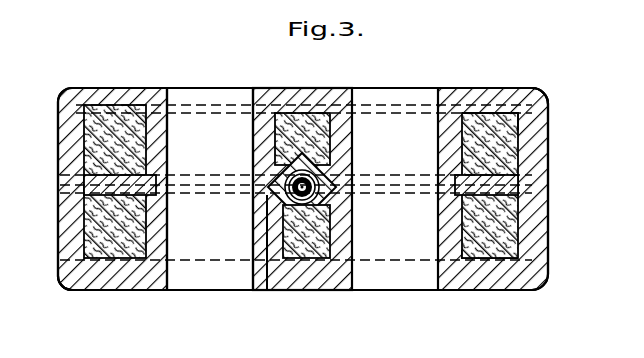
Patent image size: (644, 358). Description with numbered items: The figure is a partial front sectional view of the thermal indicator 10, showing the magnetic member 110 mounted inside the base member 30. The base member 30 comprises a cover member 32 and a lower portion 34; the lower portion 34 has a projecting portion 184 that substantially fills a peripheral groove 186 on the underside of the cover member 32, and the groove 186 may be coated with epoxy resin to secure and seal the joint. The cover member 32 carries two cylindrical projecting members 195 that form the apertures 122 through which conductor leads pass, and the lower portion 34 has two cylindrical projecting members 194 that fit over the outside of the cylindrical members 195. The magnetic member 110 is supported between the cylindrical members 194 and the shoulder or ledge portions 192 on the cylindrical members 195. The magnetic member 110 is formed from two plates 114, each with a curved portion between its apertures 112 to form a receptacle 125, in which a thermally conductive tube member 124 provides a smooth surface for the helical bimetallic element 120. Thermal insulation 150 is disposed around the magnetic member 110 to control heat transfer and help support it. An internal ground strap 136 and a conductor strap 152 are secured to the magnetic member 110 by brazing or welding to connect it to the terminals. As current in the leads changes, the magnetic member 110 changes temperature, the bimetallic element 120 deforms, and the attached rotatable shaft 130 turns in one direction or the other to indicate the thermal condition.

The thermal indicator 10 is at (437, 338).
The base member 30 is at (541, 319).
The cover member 32 is at (497, 90).
The lower portion 34 is at (81, 281).
The magnetic member 110 is at (534, 193).
The aperture 112 is at (164, 211).
The plate 114 is at (75, 190).
The bimetallic element 120 is at (350, 161).
The aperture 122 is at (174, 280).
The tube member 124 is at (256, 168).
The receptacle 125 is at (262, 222).
The rotatable shaft 130 is at (268, 207).
The internal ground strap 136 is at (73, 214).
The thermal insulation 150 is at (351, 237).
The conductor strap 152 is at (518, 167).
The projecting portion 184 is at (68, 118).
The groove 186 is at (200, 104).
The shoulder portion 192 is at (442, 172).
The cylindrical projecting member 194 is at (164, 246).
The cylindrical projecting member 195 is at (168, 140).